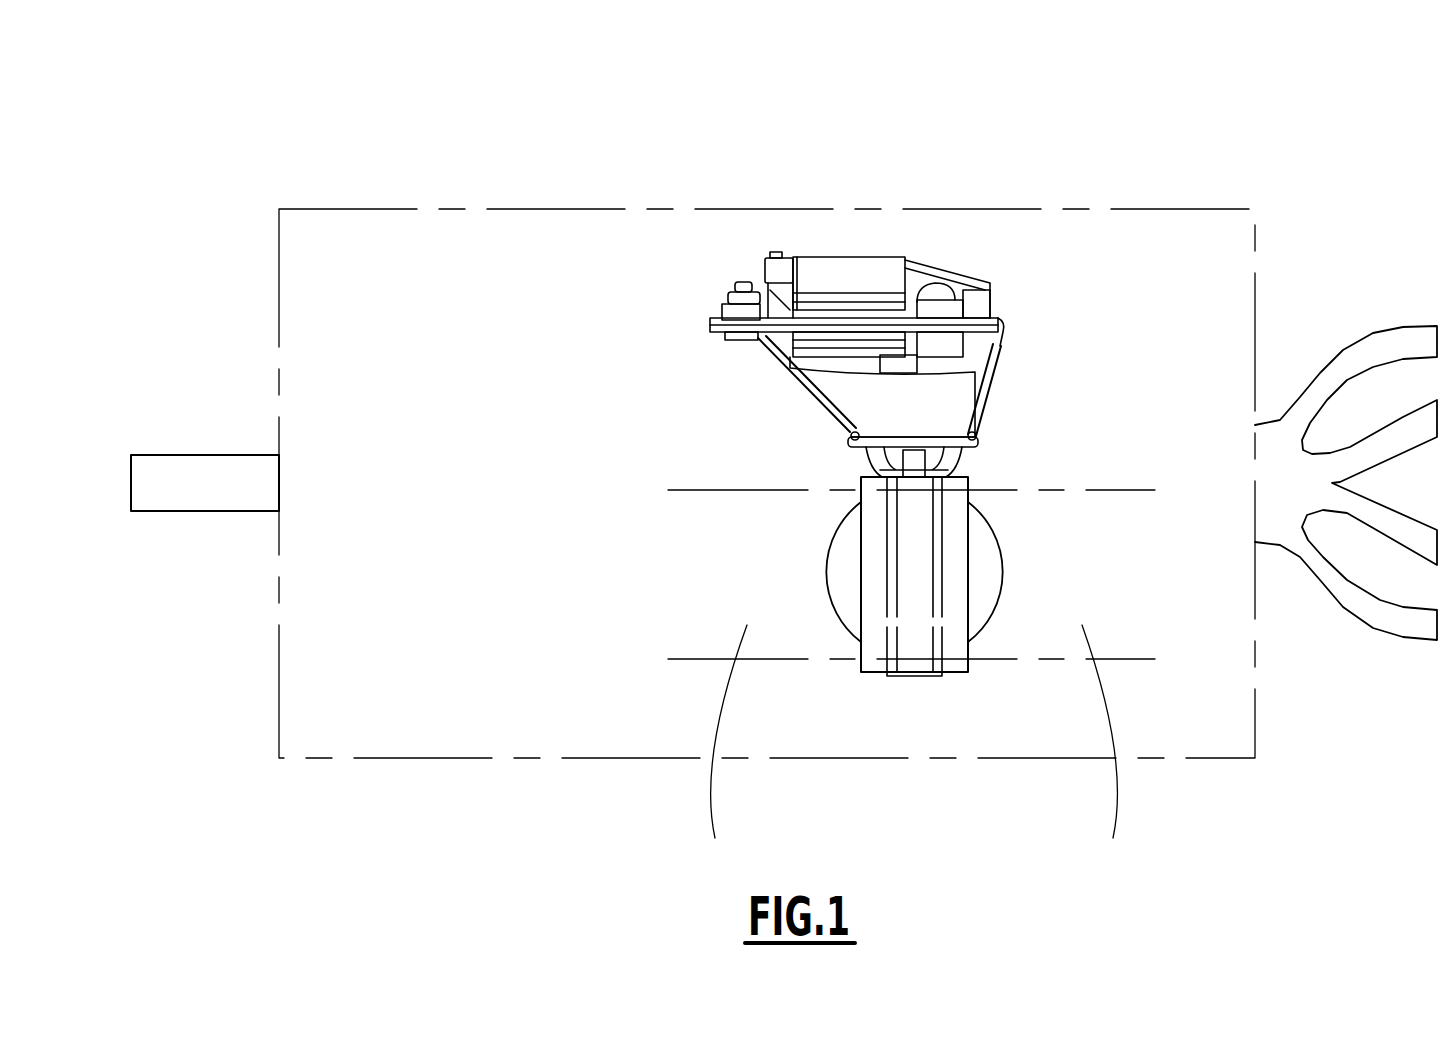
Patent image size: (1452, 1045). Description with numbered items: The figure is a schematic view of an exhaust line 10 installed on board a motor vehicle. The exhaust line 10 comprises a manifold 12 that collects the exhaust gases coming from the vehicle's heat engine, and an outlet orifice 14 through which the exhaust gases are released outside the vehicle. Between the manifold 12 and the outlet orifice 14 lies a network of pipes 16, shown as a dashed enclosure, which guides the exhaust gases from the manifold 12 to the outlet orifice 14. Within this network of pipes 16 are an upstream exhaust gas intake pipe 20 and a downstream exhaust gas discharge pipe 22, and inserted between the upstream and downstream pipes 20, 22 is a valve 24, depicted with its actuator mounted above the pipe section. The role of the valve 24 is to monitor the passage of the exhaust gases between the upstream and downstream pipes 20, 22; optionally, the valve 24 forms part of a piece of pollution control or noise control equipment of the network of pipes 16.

The exhaust line 10 is at (250, 176).
The manifold 12 is at (1413, 296).
The outlet orifice 14 is at (210, 482).
The network of pipes 16 is at (1051, 200).
The upstream exhaust gas intake pipe 20 is at (1100, 745).
The downstream exhaust gas discharge pipe 22 is at (725, 745).
The valve 24 is at (914, 702).